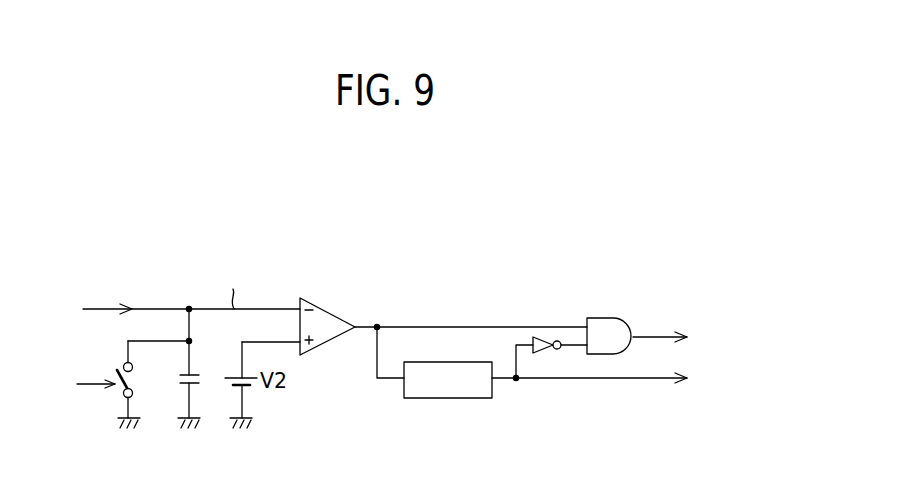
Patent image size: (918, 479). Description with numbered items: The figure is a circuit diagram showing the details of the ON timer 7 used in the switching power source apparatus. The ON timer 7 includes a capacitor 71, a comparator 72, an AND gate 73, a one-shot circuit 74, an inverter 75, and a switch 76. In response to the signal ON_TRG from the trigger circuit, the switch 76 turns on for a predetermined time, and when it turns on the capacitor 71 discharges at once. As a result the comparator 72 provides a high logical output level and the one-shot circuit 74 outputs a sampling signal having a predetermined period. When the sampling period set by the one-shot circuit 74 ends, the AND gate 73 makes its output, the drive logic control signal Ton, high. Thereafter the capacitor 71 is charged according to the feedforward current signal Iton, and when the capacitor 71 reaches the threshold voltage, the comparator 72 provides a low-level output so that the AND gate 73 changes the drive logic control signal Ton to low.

The ON timer 7 is at (497, 247).
The capacitor 71 is at (203, 378).
The comparator 72 is at (330, 305).
The AND gate 73 is at (608, 317).
The one-shot circuit 74 is at (448, 398).
The inverter 75 is at (540, 335).
The switch 76 is at (110, 368).